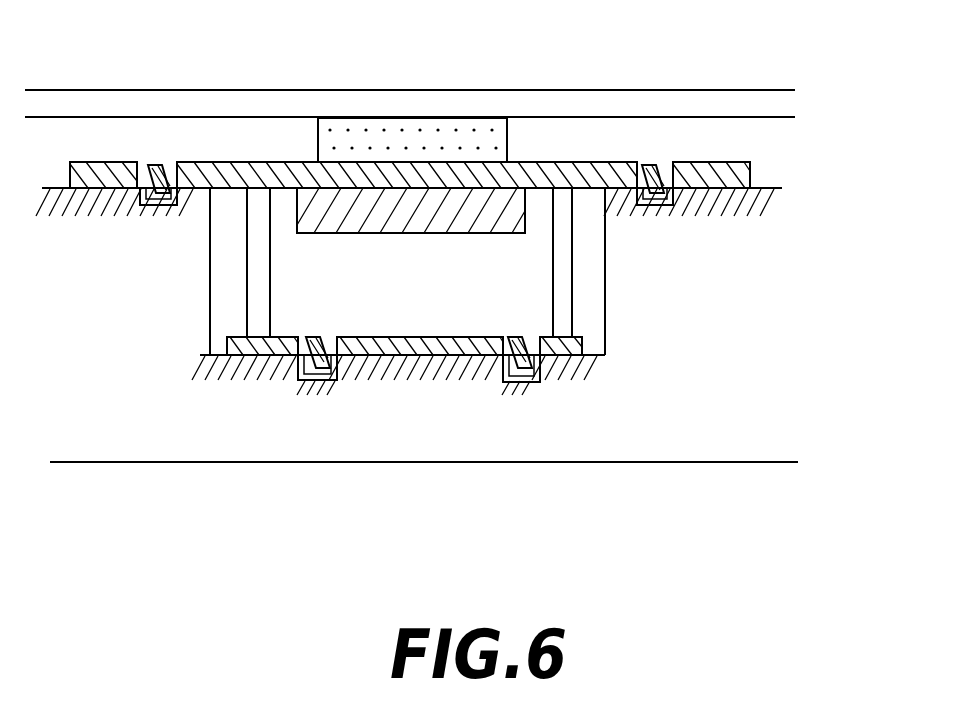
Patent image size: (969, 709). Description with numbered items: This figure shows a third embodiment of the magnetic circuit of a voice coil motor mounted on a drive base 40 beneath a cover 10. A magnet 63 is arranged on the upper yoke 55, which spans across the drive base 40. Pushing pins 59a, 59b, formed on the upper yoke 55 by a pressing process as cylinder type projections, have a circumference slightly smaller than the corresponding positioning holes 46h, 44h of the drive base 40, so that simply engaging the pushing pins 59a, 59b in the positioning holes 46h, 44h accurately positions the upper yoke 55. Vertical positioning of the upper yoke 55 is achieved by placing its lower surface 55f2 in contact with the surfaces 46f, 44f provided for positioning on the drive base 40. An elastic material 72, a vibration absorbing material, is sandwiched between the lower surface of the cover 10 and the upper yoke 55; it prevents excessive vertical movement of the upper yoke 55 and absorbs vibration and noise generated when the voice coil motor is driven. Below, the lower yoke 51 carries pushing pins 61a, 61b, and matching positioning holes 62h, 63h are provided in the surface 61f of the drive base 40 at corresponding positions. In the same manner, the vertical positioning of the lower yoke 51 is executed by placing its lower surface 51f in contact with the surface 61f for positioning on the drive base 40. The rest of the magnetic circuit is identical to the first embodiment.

The cover 10 is at (578, 100).
The elastic material 72 is at (460, 128).
The upper yoke 55 is at (267, 170).
The lower surface of the upper yoke 55f2 is at (107, 165).
The pushing pin 59a is at (163, 178).
The pushing pin 59b is at (655, 180).
The positioning hole 46h is at (140, 208).
The positioning surface 46f is at (181, 204).
The positioning surface 44f is at (630, 200).
The positioning hole 44h is at (673, 206).
The magnet 63 is at (513, 213).
The positioning hole 63h is at (538, 380).
The positioning hole 62h is at (313, 380).
The pushing pin 61a is at (295, 368).
The pushing pin 61b is at (503, 368).
The surface for positioning 61f is at (247, 363).
The lower yoke 51 is at (413, 357).
The lower surface of the lower yoke 51f is at (555, 357).
The drive base 40 is at (718, 445).